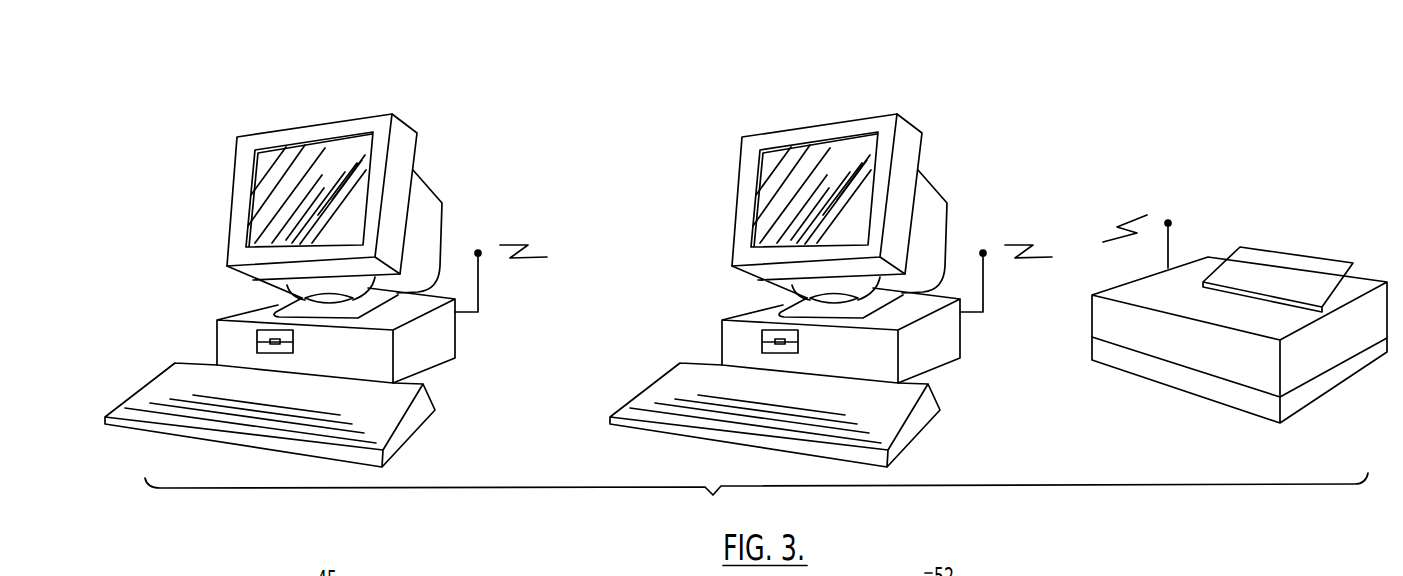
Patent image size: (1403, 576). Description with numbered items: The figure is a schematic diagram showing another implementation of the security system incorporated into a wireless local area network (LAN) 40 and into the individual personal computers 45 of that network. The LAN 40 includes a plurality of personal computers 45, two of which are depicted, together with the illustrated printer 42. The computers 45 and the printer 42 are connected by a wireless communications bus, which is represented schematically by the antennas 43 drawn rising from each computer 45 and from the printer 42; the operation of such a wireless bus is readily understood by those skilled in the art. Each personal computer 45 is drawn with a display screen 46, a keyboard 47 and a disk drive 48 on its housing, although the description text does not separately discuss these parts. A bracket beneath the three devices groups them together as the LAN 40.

The wireless local area network (LAN) 40 is at (1239, 292).
The printer 42 is at (1171, 393).
The antennas 43 is at (480, 283).
The personal computers 45 is at (417, 92).
The display screen 46 is at (257, 192).
The keyboard 47 is at (412, 420).
The disk drive 48 is at (257, 330).